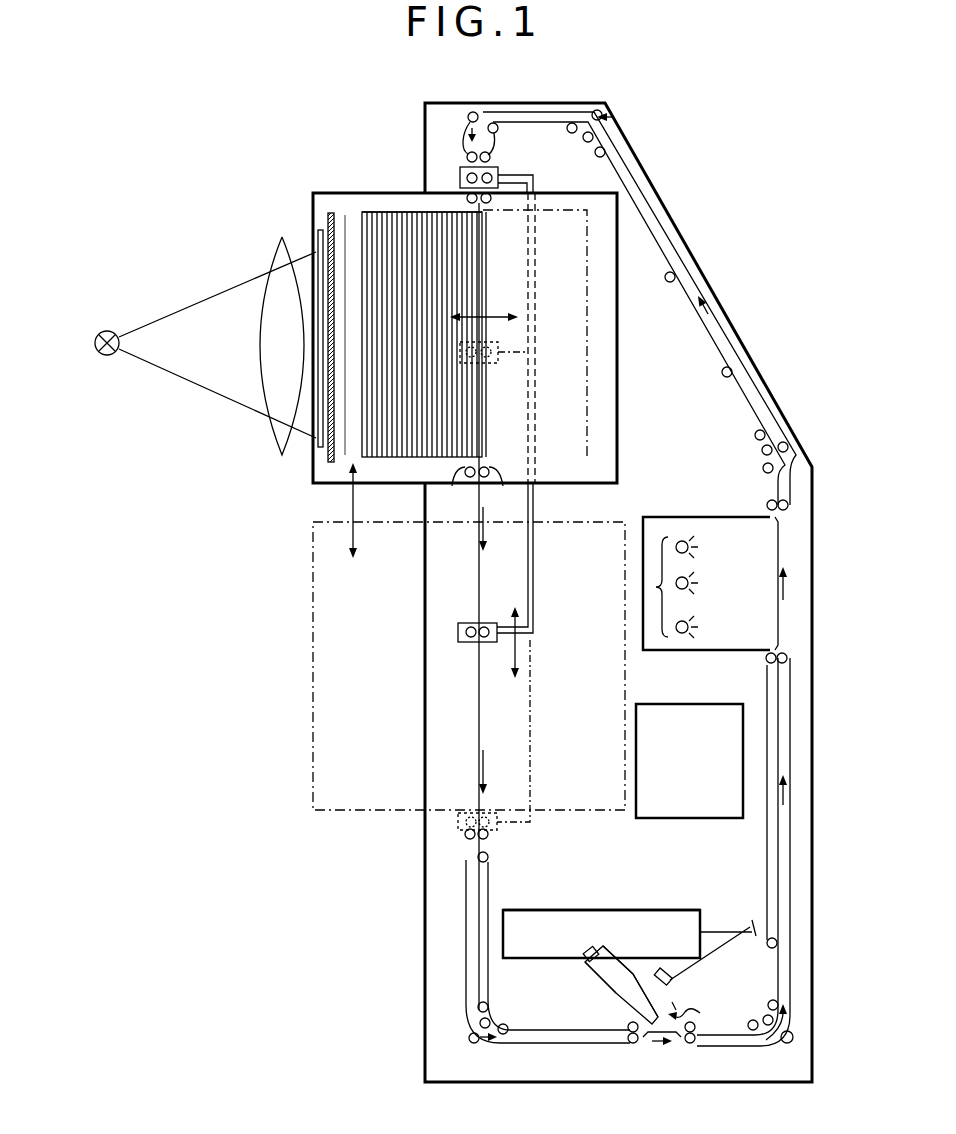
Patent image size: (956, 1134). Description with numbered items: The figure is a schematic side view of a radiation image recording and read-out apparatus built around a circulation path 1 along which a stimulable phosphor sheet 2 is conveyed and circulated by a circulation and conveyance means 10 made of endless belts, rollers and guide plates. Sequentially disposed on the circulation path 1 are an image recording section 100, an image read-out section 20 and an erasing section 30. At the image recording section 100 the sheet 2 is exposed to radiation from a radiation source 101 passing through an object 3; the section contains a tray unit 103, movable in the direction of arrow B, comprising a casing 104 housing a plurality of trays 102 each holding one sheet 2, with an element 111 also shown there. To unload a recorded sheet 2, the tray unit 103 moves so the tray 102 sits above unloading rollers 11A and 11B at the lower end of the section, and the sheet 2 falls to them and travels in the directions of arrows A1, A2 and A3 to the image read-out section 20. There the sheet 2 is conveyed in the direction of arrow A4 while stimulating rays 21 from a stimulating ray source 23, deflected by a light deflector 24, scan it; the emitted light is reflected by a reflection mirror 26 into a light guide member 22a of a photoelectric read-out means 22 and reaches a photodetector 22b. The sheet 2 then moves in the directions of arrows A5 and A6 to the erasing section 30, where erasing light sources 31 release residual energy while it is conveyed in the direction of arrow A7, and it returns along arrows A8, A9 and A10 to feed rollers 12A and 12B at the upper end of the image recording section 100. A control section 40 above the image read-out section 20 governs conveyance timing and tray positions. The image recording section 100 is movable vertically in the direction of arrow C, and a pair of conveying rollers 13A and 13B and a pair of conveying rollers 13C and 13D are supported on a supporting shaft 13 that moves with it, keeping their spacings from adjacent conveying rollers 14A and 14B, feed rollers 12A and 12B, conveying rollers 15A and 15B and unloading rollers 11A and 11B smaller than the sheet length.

The circulation path 1 is at (736, 320).
The stimulable phosphor sheet 2 is at (316, 236).
The object 3 is at (266, 256).
The circulation and conveyance means 10 is at (489, 110).
The unloading roller 11A is at (452, 491).
The unloading roller 11B is at (506, 491).
The feed roller 12A is at (483, 205).
The feed roller 12B is at (506, 186).
The supporting shaft 13 is at (538, 498).
The conveying roller 13A is at (500, 166).
The conveying roller 13B is at (462, 177).
The conveying roller 13C is at (468, 622).
The conveying roller 13D is at (485, 624).
The conveying roller 14A is at (468, 150).
The conveying roller 14B is at (509, 114).
The conveying roller 15A is at (466, 838).
The conveying roller 15B is at (489, 837).
The image read-out section 20 is at (610, 890).
The stimulating rays 21 is at (723, 952).
The photoelectric read-out means 22 is at (582, 986).
The light guide member 22a is at (625, 992).
The photodetector 22b is at (586, 960).
The stimulating ray source 23 is at (672, 918).
The light deflector 24 is at (672, 981).
The reflection mirror 26 is at (700, 1014).
The erasing section 30 is at (705, 493).
The erasing light source 31 is at (655, 587).
The control section 40 is at (705, 773).
The image recording section 100 is at (368, 163).
The radiation source 101 is at (108, 330).
The tray 102 is at (352, 238).
The tray unit 103 is at (416, 205).
The casing 104 is at (366, 206).
The photoconductive layer 111 is at (330, 462).
The arrow A1 is at (490, 534).
The arrow A2 is at (500, 770).
The arrow A3 is at (480, 1046).
The arrow A4 is at (660, 1046).
The arrow A5 is at (790, 1033).
The arrow A6 is at (790, 780).
The arrow A7 is at (790, 582).
The arrow A8 is at (718, 302).
The arrow A9 is at (614, 117).
The arrow A10 is at (470, 130).
The arrow B is at (490, 312).
The arrow C is at (350, 507).